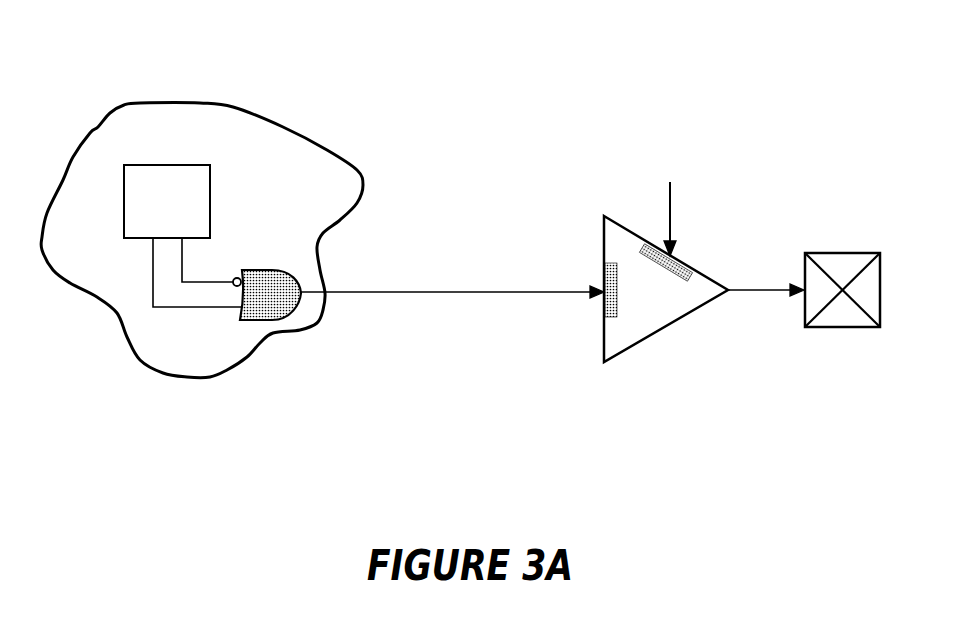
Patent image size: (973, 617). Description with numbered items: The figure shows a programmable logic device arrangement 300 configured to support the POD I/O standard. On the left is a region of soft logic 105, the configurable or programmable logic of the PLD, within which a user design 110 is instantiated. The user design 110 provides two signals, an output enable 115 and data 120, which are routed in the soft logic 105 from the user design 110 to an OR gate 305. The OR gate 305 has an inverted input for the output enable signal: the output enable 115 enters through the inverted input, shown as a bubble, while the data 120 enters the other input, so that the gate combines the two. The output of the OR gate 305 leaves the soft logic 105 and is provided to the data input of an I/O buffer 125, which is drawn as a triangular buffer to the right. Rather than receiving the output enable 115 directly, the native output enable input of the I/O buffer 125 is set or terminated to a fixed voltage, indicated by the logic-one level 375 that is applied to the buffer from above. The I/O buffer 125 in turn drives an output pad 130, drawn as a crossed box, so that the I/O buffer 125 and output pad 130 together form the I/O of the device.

The system 300 is at (761, 54).
The soft logic 105 is at (297, 130).
The user design 110 is at (167, 201).
The output enable 115 is at (215, 277).
The data 120 is at (188, 308).
The OR gate 305 is at (267, 320).
The I/O buffer 125 is at (650, 338).
The "1" 375 is at (670, 189).
The output pad 130 is at (833, 252).